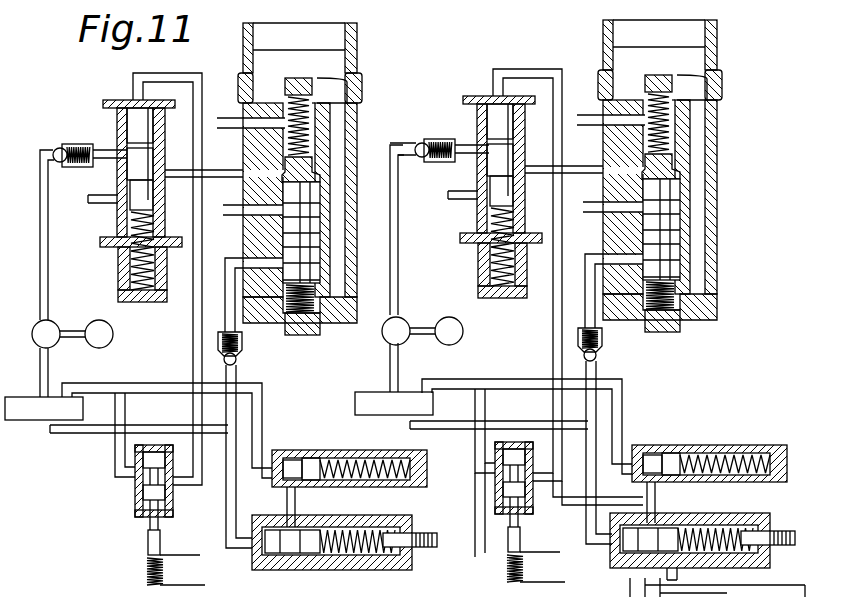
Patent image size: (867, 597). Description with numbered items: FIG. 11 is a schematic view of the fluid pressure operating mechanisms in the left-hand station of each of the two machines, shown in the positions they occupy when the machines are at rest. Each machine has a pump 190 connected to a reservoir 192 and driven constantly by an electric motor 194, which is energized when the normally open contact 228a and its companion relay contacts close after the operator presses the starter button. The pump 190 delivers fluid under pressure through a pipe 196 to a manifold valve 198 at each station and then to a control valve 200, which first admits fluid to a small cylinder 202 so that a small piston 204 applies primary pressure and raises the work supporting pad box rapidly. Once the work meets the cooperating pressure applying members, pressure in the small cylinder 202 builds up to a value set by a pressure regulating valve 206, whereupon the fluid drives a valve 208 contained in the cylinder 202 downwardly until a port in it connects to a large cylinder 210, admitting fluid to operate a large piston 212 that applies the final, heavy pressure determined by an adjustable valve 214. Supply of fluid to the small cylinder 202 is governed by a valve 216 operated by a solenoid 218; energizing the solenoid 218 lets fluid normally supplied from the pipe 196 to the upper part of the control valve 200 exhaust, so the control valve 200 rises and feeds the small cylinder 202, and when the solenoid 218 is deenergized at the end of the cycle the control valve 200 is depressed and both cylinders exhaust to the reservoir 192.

The pump 190 is at (50, 327).
The reservoir 192 is at (30, 414).
The electric motor 194 is at (104, 346).
The pipe 196 is at (50, 288).
The manifold valve 198 is at (68, 140).
The control valve 200 is at (118, 128).
The small cylinder 202 is at (287, 144).
The small piston 204 is at (290, 87).
The pressure regulating valve 206 is at (415, 472).
The valve 208 is at (294, 255).
The large cylinder 210 is at (263, 33).
The large piston 212 is at (264, 61).
The valve 214 is at (412, 520).
The valve 216 is at (153, 445).
The solenoid 218 is at (160, 548).
The normally open contact 228a is at (642, 584).